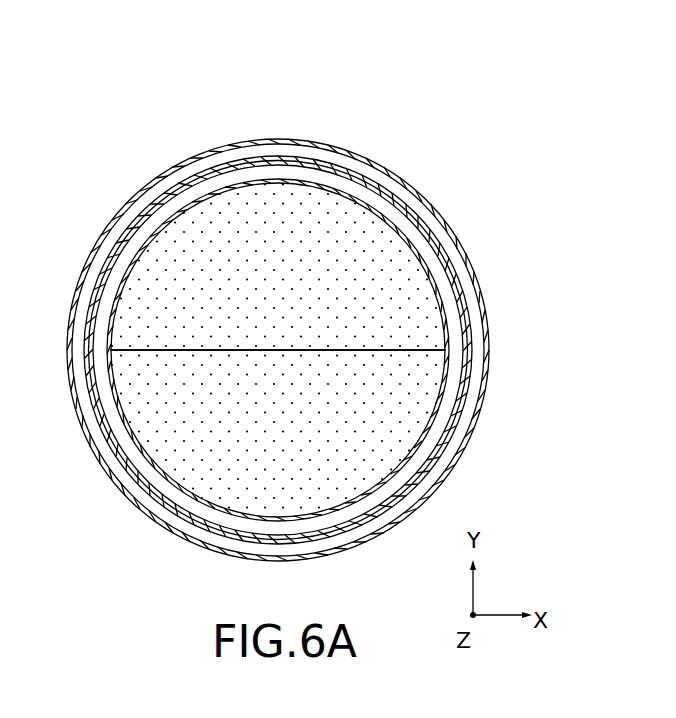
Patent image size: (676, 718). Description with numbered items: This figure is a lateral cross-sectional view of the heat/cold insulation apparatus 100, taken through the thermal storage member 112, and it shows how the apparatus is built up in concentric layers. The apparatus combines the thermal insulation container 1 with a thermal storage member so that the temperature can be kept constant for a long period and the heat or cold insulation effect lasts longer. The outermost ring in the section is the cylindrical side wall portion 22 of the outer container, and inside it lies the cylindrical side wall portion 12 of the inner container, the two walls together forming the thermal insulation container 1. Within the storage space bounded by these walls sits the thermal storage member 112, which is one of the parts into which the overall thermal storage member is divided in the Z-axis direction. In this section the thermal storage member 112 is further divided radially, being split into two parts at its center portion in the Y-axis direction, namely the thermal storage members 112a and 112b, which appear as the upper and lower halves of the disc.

The thermal insulation container 1 is at (480, 126).
The heat/cold insulation apparatus 100 is at (190, 93).
The side wall portion 12 is at (258, 176).
The side wall portion 22 is at (299, 152).
The thermal storage member 112 is at (322, 218).
The thermal storage member 112a is at (307, 292).
The thermal storage member 112b is at (307, 425).